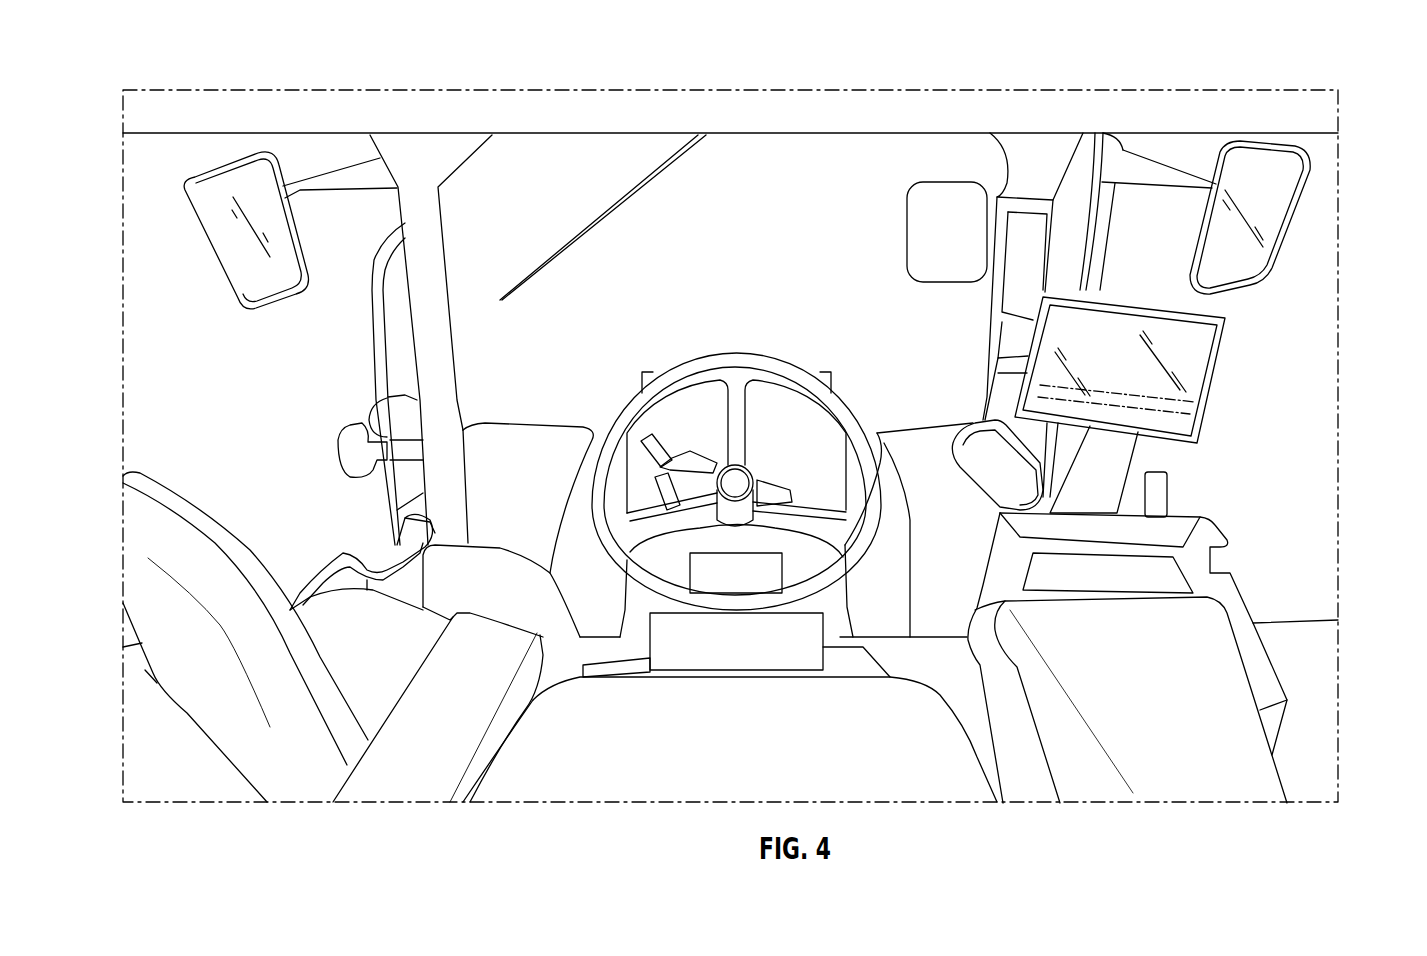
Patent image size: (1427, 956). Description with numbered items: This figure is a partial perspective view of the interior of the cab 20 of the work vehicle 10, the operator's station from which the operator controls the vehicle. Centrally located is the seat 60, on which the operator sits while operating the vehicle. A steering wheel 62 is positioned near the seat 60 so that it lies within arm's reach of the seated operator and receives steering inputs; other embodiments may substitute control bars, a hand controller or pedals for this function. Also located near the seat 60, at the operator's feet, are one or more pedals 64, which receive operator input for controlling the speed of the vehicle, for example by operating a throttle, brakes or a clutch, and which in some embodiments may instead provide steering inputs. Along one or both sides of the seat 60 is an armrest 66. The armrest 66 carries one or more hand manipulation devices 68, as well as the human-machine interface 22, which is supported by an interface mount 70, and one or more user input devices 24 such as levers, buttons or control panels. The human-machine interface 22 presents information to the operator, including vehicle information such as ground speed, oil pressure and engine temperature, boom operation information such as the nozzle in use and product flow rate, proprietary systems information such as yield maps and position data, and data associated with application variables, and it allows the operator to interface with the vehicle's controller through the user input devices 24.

The work vehicle 10 is at (965, 62).
The cab 20 is at (98, 268).
The human-machine interface (HMI) 22 is at (1222, 432).
The user input devices 24 is at (1200, 402).
The seat 60 is at (623, 767).
The steering wheel 62 is at (620, 410).
The pedals 64 is at (893, 660).
The armrest 66 is at (1250, 557).
The hand manipulation devices 68 is at (980, 430).
The interface mount 70 is at (1107, 458).